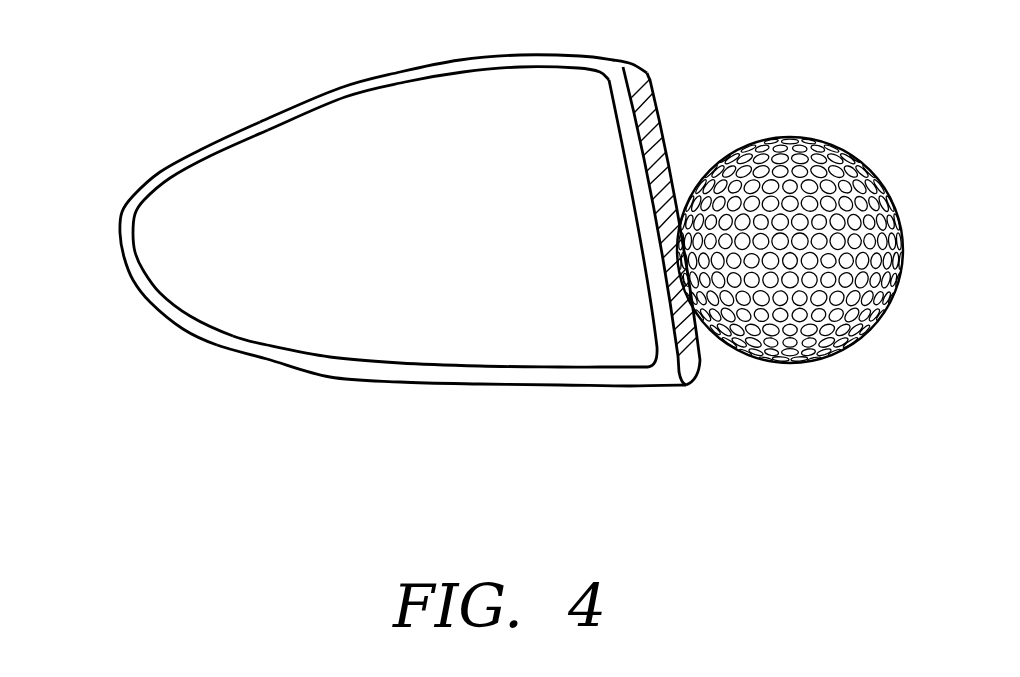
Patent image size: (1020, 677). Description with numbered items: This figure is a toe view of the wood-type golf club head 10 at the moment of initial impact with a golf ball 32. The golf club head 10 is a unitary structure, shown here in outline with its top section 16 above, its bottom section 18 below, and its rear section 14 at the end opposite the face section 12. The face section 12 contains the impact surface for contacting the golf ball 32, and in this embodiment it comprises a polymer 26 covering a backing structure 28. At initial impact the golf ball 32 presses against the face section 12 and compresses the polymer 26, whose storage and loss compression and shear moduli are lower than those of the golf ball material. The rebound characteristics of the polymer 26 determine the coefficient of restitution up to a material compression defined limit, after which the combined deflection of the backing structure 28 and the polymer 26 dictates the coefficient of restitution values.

The wood-type golf club head 10 is at (145, 74).
The face section 12 is at (657, 106).
The rear section 14 is at (183, 329).
The top section 16 is at (377, 70).
The bottom section 18 is at (433, 388).
The polymer 26 is at (653, 91).
The backing structure 28 is at (637, 216).
The golf ball 32 is at (792, 150).